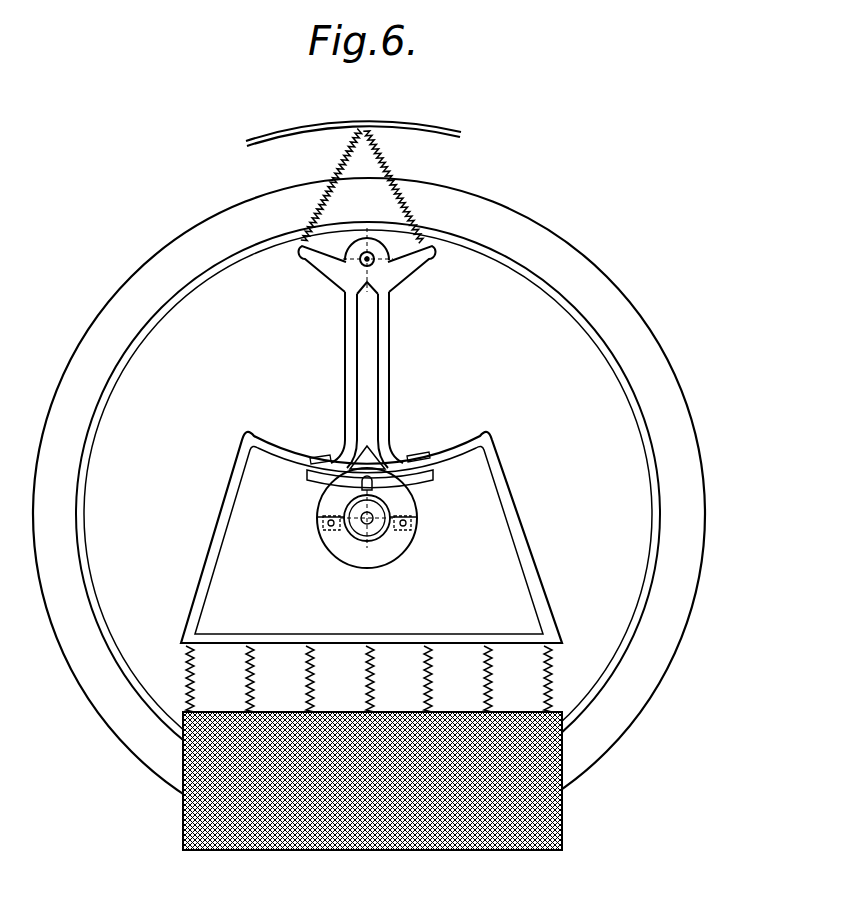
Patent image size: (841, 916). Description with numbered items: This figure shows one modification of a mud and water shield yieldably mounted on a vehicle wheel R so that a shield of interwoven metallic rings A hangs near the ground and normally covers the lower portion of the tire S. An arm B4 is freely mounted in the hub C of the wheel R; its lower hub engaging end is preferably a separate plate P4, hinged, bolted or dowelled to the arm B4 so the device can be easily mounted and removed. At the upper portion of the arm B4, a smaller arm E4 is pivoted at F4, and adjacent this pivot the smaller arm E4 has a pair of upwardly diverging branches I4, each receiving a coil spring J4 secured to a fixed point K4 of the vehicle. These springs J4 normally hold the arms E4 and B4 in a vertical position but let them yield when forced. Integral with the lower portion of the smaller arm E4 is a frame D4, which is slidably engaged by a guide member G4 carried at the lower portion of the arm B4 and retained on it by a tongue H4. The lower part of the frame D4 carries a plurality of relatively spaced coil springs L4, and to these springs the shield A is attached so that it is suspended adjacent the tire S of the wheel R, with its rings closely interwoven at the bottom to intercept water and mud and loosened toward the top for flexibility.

The tire S is at (628, 338).
The vehicle wheel R is at (605, 397).
The fixed point K4 is at (353, 110).
The coil spring J4 is at (377, 152).
The pivot F4 is at (378, 263).
The upwardly diverging branches I4 is at (330, 267).
The smaller arm E4 is at (365, 347).
The arm B4 is at (387, 393).
The frame D4 is at (515, 513).
The guide member G4 is at (425, 453).
The tongue H4 is at (373, 487).
The plate P4 is at (395, 545).
The hub C is at (360, 530).
The coil springs L4 is at (317, 677).
The shield of interwoven metallic rings A is at (563, 808).